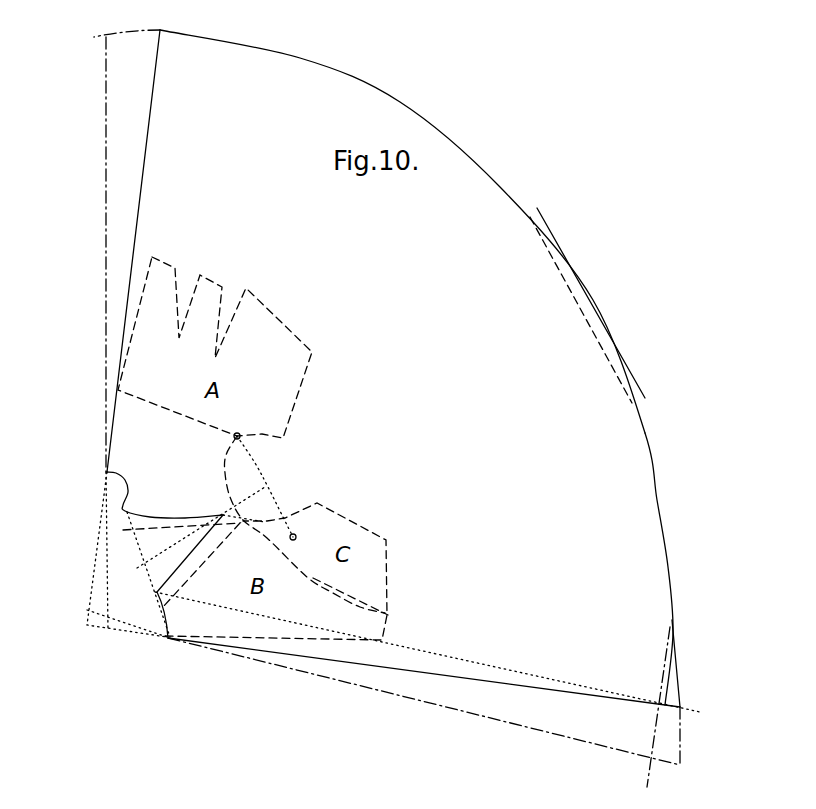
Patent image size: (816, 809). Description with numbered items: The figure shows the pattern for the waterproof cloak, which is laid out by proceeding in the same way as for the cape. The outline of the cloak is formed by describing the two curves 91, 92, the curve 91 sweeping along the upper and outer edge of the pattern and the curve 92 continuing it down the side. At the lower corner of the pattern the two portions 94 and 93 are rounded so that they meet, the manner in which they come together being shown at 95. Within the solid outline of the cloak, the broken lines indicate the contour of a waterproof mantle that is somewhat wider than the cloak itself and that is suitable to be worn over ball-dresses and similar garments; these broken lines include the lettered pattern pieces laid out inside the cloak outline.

The curve 91 is at (402, 231).
The curve 92 is at (665, 570).
The rounded portion 93 is at (112, 554).
The rounded portion 94 is at (135, 626).
The meeting point 95 is at (587, 305).